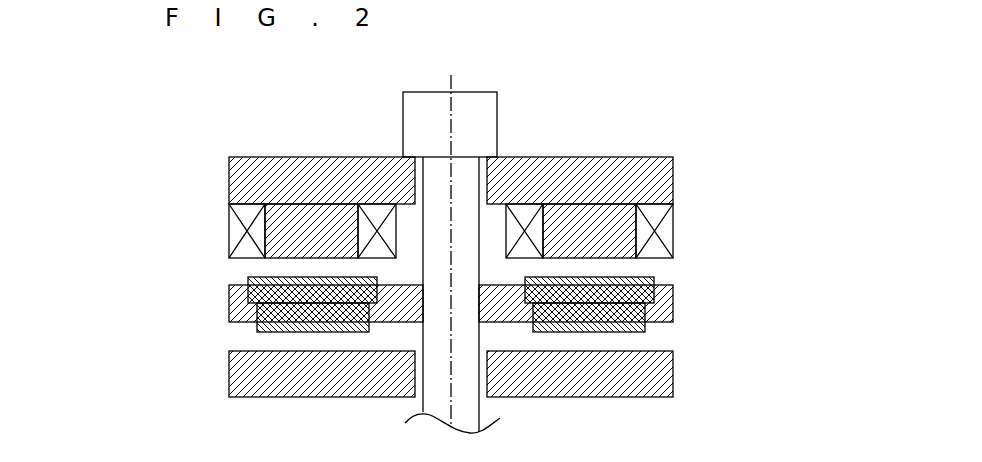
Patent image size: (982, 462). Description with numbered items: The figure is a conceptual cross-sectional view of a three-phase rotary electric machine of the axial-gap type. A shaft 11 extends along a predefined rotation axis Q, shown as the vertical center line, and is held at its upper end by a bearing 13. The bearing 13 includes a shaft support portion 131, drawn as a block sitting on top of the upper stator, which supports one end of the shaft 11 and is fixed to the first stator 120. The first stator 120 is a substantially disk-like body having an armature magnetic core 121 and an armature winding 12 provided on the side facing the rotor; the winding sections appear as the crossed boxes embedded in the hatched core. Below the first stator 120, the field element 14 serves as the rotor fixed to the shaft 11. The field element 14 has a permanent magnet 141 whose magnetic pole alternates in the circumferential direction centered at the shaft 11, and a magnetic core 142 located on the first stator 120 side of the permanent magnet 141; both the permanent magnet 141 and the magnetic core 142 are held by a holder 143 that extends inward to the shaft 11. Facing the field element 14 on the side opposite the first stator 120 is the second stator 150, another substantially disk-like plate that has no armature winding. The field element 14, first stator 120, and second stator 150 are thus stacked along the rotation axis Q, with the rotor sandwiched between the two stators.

The rotation axis Q is at (452, 82).
The shaft 11 is at (479, 410).
The armature winding 12 is at (229, 233).
The bearing 13 is at (400, 134).
The shaft support portion 131 is at (497, 121).
The first stator 120 is at (395, 207).
The armature magnetic core 121 is at (267, 221).
The field element 14 is at (400, 302).
The permanent magnet 141 is at (257, 327).
The magnetic core 142 is at (263, 277).
The holder 143 is at (229, 295).
The second stator 150 is at (229, 378).